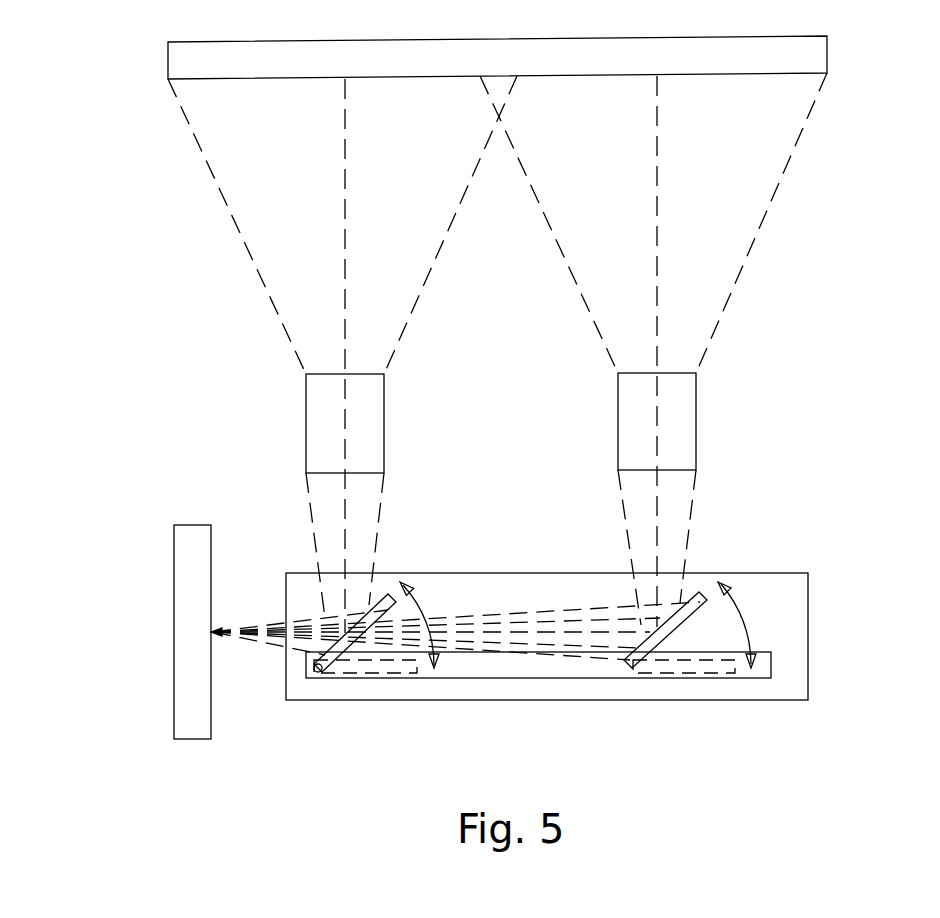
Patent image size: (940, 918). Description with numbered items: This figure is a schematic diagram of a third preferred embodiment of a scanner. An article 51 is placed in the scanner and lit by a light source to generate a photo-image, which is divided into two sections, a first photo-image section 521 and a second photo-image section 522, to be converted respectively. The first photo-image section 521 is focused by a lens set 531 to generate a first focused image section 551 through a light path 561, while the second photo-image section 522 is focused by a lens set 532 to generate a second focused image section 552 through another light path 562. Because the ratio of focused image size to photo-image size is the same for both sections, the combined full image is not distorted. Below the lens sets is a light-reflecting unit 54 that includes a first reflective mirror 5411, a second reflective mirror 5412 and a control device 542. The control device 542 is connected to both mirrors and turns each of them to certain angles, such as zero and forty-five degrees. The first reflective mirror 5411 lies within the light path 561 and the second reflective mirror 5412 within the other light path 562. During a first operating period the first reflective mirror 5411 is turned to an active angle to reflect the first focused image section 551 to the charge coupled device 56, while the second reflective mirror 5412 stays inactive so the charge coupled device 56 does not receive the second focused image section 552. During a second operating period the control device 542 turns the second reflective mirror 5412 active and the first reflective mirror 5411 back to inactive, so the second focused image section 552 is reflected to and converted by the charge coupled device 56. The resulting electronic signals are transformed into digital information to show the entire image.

The article 51 is at (807, 60).
The first photo-image section 521 is at (220, 193).
The second photo-image section 522 is at (777, 190).
The lens set 531 is at (325, 415).
The lens set 532 is at (675, 411).
The light-reflecting unit 54 is at (790, 645).
The first reflective mirror 5411 is at (383, 595).
The second reflective mirror 5412 is at (703, 597).
The control device 542 is at (525, 672).
The first focused image section 551 is at (326, 616).
The second focused image section 552 is at (640, 607).
The charge coupled device 56 is at (187, 607).
The light path 561 is at (347, 504).
The light path 562 is at (658, 500).